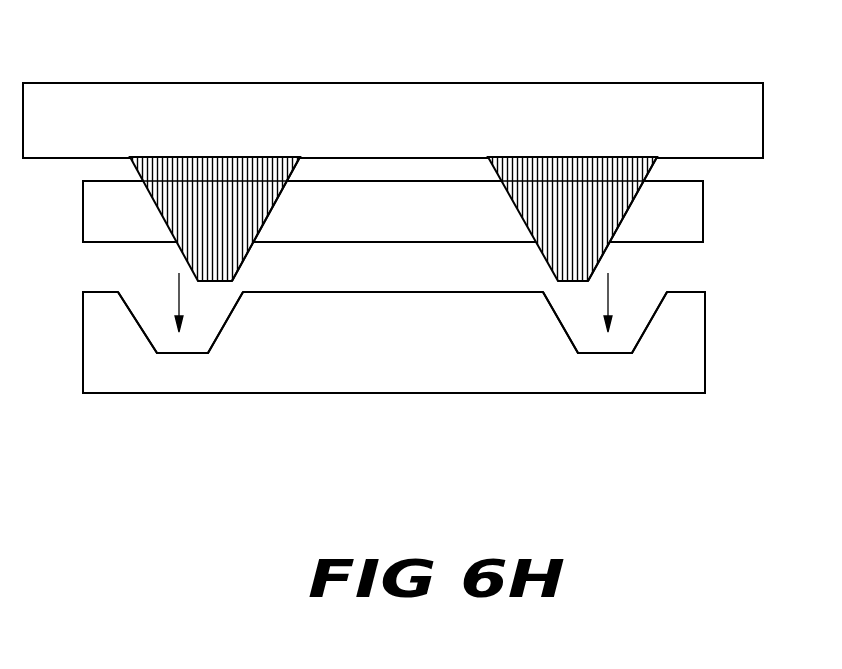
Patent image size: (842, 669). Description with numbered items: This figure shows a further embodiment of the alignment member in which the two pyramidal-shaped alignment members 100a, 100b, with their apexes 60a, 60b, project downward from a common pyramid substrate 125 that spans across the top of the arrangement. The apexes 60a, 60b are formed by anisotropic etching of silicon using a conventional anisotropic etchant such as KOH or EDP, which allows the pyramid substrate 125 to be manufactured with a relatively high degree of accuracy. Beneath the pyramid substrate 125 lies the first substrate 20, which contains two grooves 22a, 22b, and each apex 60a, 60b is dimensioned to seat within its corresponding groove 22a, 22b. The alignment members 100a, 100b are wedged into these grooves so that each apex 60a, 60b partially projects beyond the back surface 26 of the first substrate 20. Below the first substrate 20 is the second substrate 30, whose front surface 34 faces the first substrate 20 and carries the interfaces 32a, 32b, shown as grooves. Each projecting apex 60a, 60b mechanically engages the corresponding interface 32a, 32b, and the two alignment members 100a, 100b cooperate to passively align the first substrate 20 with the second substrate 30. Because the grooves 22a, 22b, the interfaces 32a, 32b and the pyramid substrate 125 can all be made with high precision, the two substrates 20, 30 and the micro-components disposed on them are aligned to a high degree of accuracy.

The pyramid substrate 125 is at (448, 131).
The first substrate 20 is at (398, 220).
The alignment member 100a is at (232, 215).
The alignment member 100b is at (592, 215).
The groove 22a is at (283, 157).
The groove 22b is at (624, 217).
The back surface 26 is at (342, 243).
The second substrate 30 is at (392, 366).
The interface 32a is at (229, 316).
The interface 32b is at (650, 333).
The front surface 34 is at (434, 291).
The apex 60a is at (193, 258).
The apex 60b is at (550, 260).